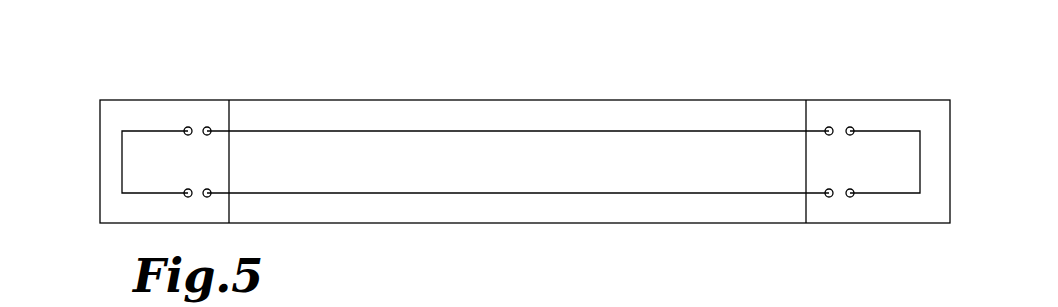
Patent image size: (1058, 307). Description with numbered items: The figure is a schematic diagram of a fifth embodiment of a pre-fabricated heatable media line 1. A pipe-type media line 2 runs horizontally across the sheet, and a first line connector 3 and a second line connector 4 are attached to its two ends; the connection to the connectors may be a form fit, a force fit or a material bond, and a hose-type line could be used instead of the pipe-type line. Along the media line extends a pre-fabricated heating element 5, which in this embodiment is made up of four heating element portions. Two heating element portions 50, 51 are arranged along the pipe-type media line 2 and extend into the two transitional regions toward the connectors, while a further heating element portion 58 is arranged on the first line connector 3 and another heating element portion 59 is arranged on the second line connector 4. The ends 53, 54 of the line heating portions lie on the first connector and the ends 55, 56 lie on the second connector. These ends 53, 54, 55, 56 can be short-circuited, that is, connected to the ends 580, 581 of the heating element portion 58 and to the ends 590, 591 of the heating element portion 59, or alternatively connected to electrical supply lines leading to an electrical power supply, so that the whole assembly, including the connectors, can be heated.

The pre-fabricated heatable media line 1 is at (598, 80).
The pipe-type media line 2 is at (665, 116).
The first line connector 3 is at (115, 203).
The second line connector 4 is at (937, 104).
The pre-fabricated heating element 5 is at (428, 120).
The heating element portion 50 is at (436, 195).
The second heating element portion 51 is at (509, 131).
The end of heating element portion 53 is at (207, 197).
The end of heating element portion 54 is at (208, 126).
The end of heating element portion 55 is at (829, 197).
The end of heating element portion 56 is at (828, 128).
The heating element portion 58 is at (145, 130).
The heating element portion 59 is at (886, 129).
The end of heating element portion 580 is at (188, 128).
The end of heating element portion 581 is at (186, 197).
The end of heating element portion 590 is at (849, 128).
The end of heating element portion 591 is at (851, 197).